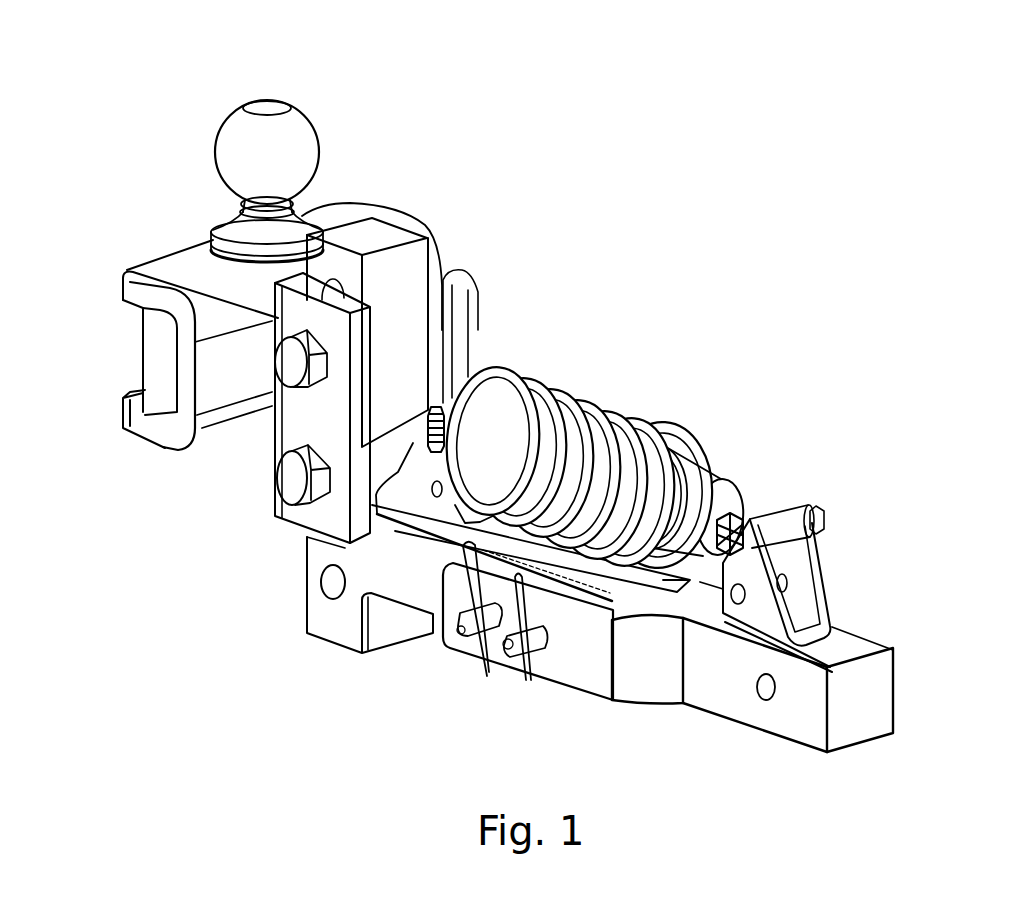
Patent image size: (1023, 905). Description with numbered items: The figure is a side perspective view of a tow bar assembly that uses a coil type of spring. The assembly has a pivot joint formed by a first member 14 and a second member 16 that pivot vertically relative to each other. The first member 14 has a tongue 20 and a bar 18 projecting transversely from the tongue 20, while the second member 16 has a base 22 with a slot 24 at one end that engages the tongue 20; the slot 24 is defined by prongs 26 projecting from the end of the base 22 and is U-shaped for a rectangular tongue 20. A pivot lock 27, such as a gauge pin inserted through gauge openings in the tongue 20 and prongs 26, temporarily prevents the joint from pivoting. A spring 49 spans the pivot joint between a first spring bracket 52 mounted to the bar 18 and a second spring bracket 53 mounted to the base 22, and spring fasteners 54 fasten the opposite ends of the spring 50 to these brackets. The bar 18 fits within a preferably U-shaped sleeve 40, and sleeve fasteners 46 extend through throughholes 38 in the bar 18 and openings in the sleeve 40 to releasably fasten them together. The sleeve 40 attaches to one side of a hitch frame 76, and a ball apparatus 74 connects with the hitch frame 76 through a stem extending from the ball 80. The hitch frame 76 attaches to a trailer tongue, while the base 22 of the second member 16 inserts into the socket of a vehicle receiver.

The first member 14 is at (338, 637).
The second member 16 is at (868, 687).
The bar 18 is at (400, 236).
The tongue 20 is at (603, 573).
The base 22 is at (855, 718).
The slot 24 is at (663, 587).
The prongs 26 is at (568, 657).
The pivot lock 27 is at (502, 650).
The throughholes 38 is at (322, 588).
The sleeve 40 is at (295, 412).
The sleeve fasteners 46 is at (295, 485).
The spring 49 is at (608, 418).
The spring 50 is at (652, 424).
The first spring bracket 52 is at (472, 370).
The second spring bracket 53 is at (797, 583).
The spring fasteners 54 is at (753, 509).
The ball apparatus 74 is at (174, 263).
The hitch frame 76 is at (163, 435).
The ball 80 is at (266, 102).